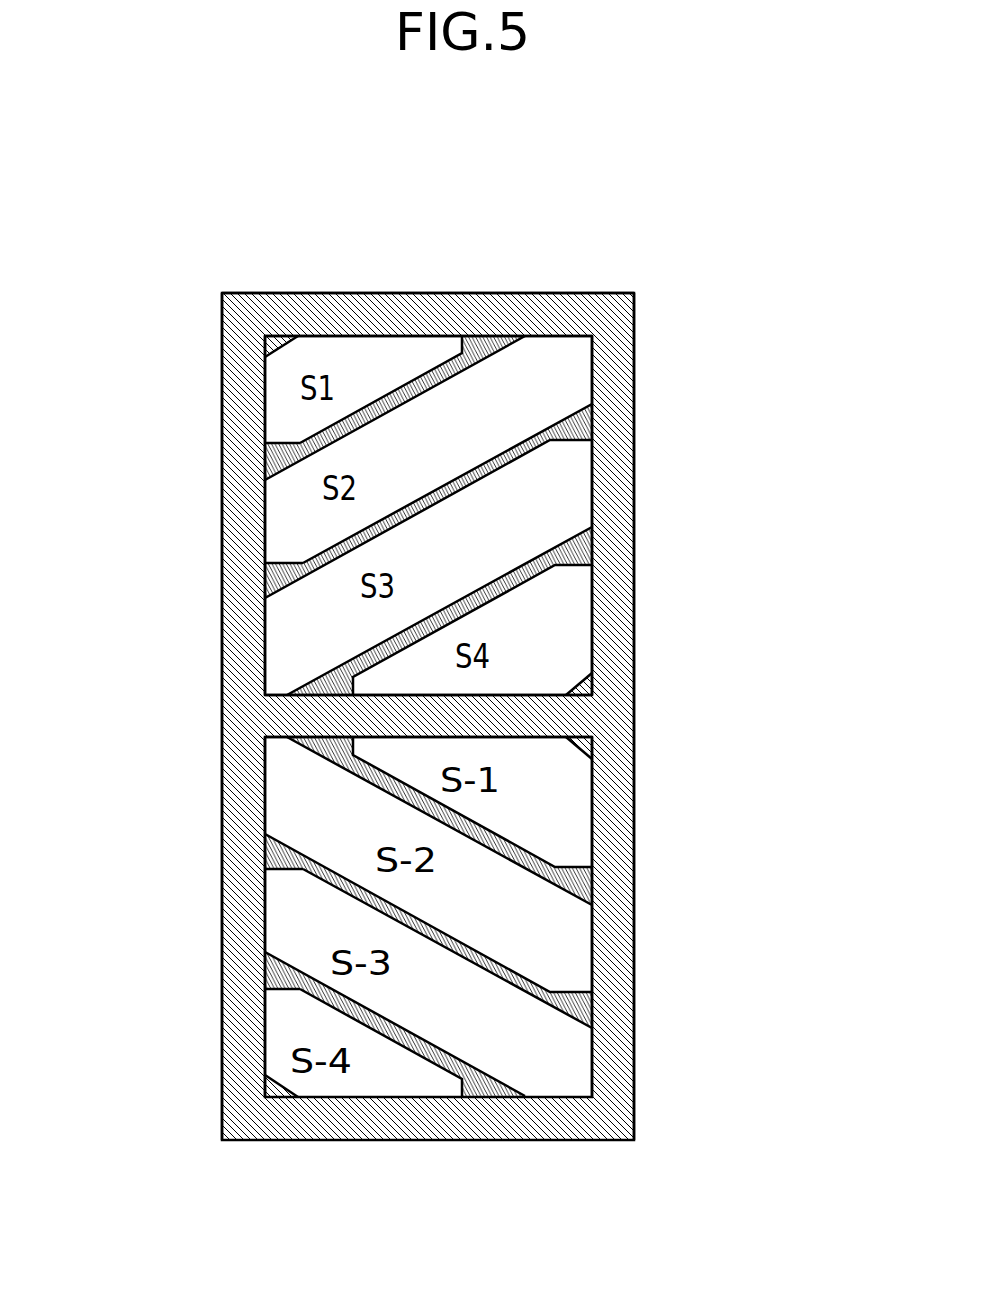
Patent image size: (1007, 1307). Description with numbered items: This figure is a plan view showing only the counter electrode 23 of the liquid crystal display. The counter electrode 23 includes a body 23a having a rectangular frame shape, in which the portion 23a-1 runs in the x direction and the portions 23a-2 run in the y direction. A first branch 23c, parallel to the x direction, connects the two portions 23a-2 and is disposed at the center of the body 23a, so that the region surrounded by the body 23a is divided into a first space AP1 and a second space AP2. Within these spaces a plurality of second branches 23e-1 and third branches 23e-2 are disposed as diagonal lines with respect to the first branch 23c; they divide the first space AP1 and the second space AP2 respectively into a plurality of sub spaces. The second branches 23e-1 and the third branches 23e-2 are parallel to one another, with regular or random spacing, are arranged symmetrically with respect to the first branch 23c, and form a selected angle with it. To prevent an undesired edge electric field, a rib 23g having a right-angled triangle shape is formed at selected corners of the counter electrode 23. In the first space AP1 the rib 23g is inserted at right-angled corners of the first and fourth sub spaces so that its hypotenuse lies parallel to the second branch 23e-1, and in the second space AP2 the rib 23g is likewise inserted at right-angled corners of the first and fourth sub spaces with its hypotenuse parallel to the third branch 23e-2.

The counter electrode 23 is at (552, 262).
The body 23a is at (634, 358).
The portion in the x direction 23a-1 is at (604, 304).
The portion in the y direction 23a-2 is at (644, 603).
The first branch 23c is at (500, 737).
The second branch 23e-1 is at (440, 386).
The third branch 23e-2 is at (467, 1060).
The rib 23g is at (273, 337).
The first space AP1 is at (268, 419).
The second space AP2 is at (269, 885).